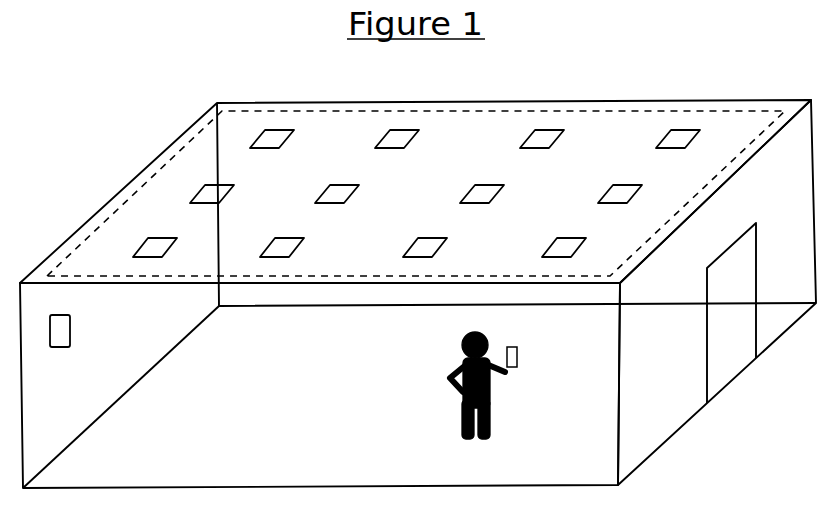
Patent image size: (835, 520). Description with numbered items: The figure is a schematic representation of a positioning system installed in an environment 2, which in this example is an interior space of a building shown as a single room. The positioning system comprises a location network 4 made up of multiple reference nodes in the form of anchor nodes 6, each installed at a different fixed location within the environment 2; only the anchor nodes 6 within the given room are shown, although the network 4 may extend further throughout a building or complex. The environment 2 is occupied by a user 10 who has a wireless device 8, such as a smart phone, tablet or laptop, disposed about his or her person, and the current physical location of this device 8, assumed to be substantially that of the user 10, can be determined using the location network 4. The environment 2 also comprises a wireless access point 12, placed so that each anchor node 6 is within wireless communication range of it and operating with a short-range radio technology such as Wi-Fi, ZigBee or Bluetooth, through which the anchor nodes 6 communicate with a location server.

The environment 2 is at (657, 101).
The location network 4 is at (510, 110).
The anchor nodes 6 is at (560, 133).
The wireless device 8 is at (518, 353).
The user 10 is at (463, 405).
The wireless access point 12 is at (71, 329).